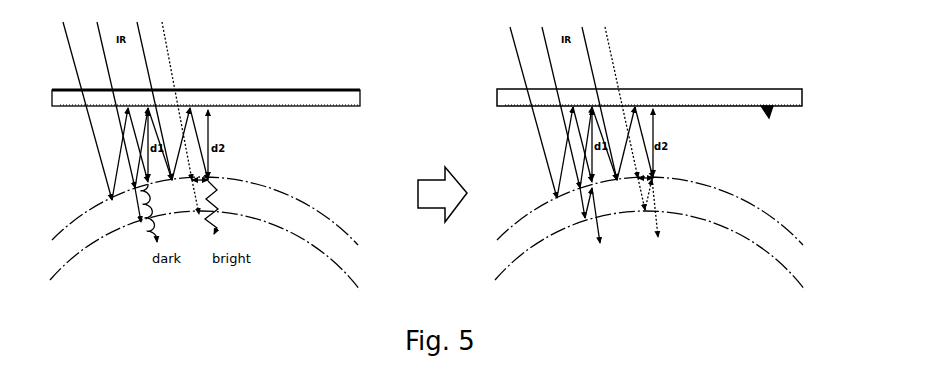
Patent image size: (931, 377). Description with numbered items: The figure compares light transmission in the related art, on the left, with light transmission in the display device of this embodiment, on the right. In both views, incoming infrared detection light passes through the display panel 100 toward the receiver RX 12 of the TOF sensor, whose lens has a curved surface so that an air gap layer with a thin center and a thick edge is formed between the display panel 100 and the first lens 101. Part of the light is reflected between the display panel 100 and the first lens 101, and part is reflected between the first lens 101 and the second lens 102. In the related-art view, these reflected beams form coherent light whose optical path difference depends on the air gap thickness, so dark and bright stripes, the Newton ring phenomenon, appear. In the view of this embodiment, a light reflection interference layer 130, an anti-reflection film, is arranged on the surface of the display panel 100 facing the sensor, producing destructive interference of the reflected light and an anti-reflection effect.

The display panel 100 is at (262, 90).
The receiver RX 12 is at (437, 220).
The first lens 101 is at (325, 217).
The second lens 102 is at (348, 272).
The light reflection interference layer 130 is at (770, 116).